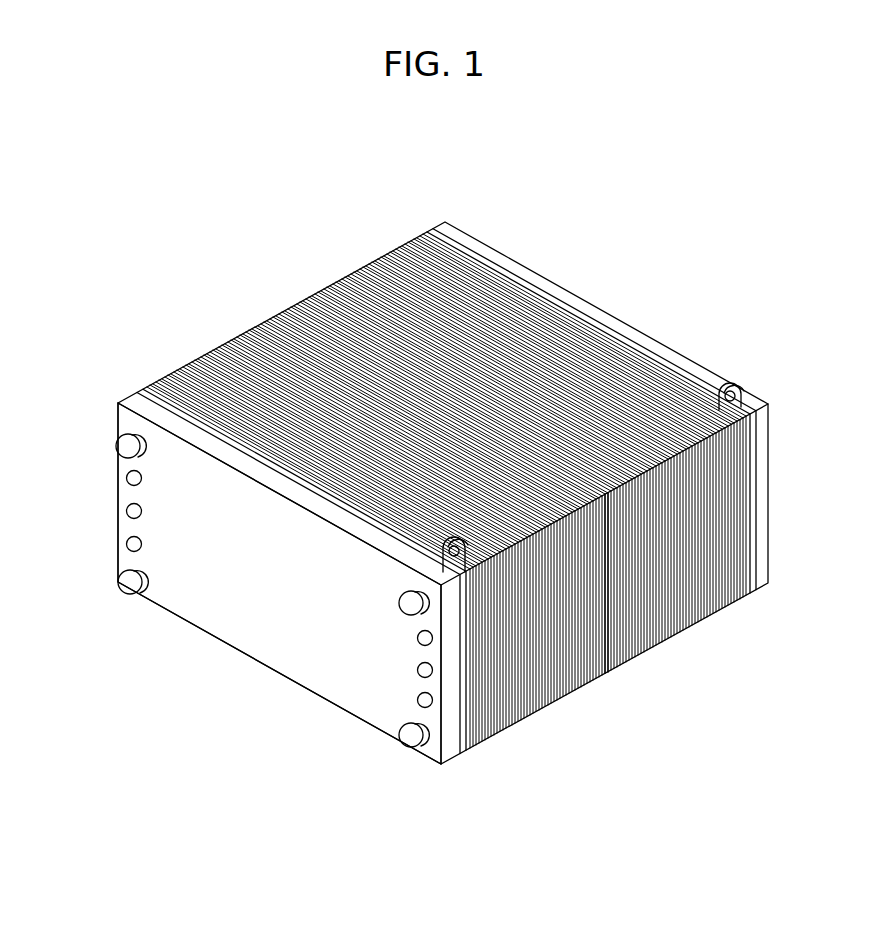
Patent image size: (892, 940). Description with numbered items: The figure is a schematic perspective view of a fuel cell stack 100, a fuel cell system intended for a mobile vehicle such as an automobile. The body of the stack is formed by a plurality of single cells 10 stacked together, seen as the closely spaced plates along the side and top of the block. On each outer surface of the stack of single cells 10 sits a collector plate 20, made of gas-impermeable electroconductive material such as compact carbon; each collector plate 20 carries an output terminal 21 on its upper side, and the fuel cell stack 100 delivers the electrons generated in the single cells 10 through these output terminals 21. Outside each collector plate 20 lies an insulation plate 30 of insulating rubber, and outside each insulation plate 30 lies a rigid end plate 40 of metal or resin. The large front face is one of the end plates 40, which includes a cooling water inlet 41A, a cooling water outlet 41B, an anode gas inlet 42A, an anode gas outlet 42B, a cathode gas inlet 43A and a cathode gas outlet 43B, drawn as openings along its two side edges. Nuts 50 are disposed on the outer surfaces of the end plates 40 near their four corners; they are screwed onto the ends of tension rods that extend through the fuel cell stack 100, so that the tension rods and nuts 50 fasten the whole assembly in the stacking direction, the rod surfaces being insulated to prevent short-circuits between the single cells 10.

The fuel cell stack 100 is at (596, 168).
The single cell 10 is at (598, 668).
The collector plate 20 is at (466, 744).
The output terminal 21 is at (452, 524).
The insulation plate 30 is at (455, 748).
The end plate 40 is at (442, 752).
The nut 50 is at (112, 441).
The cooling water inlet 41A is at (412, 664).
The cooling water outlet 41B is at (112, 506).
The anode gas inlet 42A is at (112, 535).
The anode gas outlet 42B is at (410, 632).
The cathode gas inlet 43A is at (410, 695).
The cathode gas outlet 43B is at (112, 472).